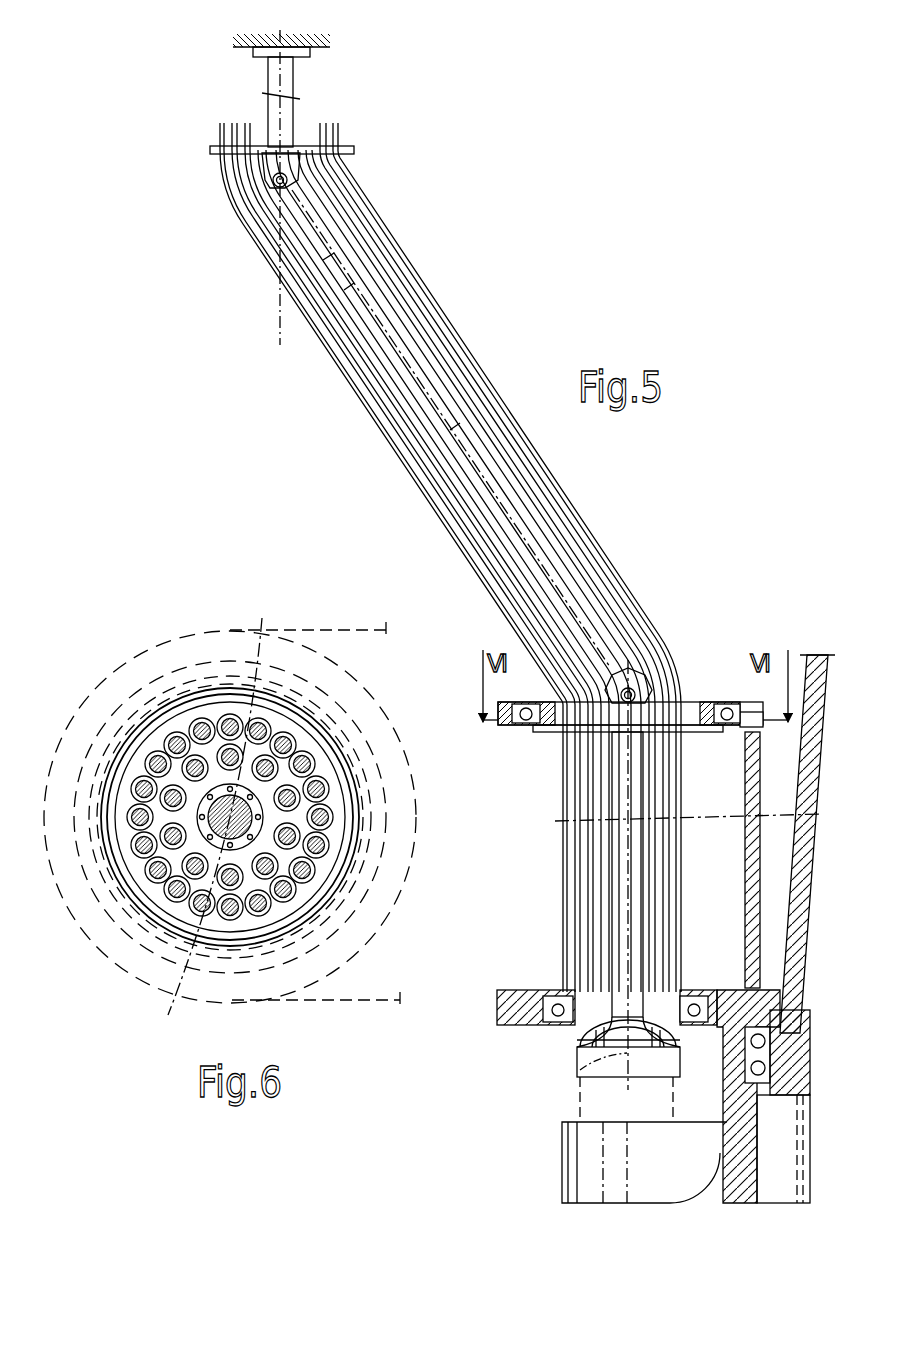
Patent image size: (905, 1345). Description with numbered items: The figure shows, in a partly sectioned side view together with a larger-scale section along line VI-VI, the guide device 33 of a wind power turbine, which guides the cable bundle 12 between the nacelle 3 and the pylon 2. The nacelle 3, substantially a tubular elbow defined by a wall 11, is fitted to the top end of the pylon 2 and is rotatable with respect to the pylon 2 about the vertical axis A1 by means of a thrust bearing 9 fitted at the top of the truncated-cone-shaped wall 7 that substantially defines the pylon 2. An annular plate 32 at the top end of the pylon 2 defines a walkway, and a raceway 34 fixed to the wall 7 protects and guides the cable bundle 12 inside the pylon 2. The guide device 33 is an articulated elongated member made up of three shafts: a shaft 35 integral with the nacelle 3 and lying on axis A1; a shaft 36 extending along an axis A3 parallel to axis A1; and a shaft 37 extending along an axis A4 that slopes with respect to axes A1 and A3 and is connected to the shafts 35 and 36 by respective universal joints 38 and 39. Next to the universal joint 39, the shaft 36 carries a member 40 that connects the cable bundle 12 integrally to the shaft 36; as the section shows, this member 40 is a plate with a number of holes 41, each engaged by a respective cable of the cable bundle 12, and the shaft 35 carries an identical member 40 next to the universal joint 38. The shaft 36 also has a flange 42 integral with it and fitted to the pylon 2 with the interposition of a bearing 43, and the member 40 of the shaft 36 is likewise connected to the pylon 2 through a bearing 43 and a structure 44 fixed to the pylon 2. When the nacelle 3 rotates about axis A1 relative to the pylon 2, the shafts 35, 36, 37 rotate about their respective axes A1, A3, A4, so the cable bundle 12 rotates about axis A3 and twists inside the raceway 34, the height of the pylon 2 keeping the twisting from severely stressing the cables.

In FIG. 5, the pylon 2 is at (830, 1056).
In FIG. 5, the nacelle 3 is at (300, 25).
In FIG. 5, the truncated-cone-shaped wall 7 is at (740, 1158).
In FIG. 5, the thrust bearing 9 is at (781, 1040).
In FIG. 5, the wall 11 is at (328, 41).
In FIG. 5, the cable bundle 12 is at (463, 331).
In FIG. 5, the annular plate 32 is at (512, 992).
In FIG. 5, the guide device 33 is at (472, 302).
In FIG. 5, the raceway 34 is at (600, 1163).
In FIG. 5, the shaft 35 is at (290, 80).
In FIG. 5, the shaft 36 is at (640, 851).
In FIG. 6, the shaft 36 is at (232, 800).
In FIG. 5, the shaft 37 is at (523, 529).
In FIG. 5, the universal joint 38 is at (305, 177).
In FIG. 5, the universal joint 39 is at (650, 683).
In FIG. 5, the member 40 is at (345, 147).
In FIG. 6, the member 40 is at (308, 897).
In FIG. 6, the holes 41 is at (333, 841).
In FIG. 5, the flange 42 is at (588, 1013).
In FIG. 5, the bearing 43 is at (716, 704).
In FIG. 6, the bearing 43 is at (368, 746).
In FIG. 6, the structure 44 is at (410, 789).
In FIG. 5, the vertical axis A1 is at (278, 306).
In FIG. 5, the axis A3 is at (578, 1071).
In FIG. 6, the axis A3 is at (266, 826).
In FIG. 5, the axis A4 is at (583, 537).